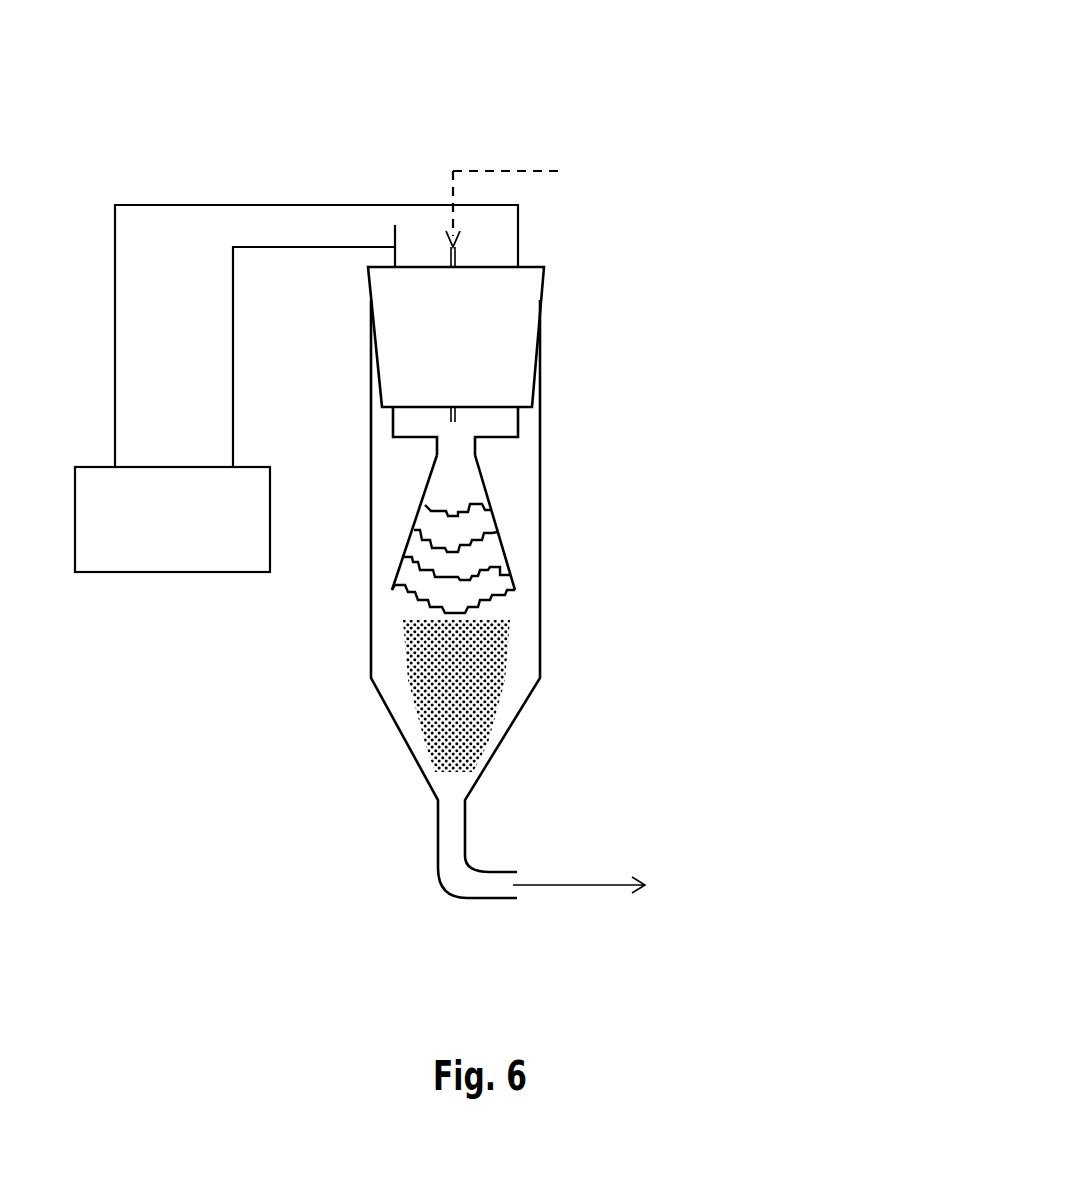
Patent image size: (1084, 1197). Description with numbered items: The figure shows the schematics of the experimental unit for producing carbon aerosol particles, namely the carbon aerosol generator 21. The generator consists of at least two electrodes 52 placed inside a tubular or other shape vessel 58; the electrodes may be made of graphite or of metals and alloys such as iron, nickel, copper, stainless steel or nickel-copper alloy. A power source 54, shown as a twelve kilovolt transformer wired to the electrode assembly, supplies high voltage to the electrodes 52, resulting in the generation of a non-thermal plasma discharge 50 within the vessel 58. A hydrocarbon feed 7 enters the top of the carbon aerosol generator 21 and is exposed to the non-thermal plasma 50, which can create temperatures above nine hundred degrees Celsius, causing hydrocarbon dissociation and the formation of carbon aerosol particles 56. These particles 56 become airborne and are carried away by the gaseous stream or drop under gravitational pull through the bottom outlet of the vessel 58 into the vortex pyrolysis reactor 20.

The hydrocarbon feed 7 is at (625, 165).
The vortex pyrolysis reactor 20 is at (723, 852).
The carbon aerosol generator 21 is at (502, 457).
The non-thermal plasma discharge 50 is at (460, 575).
The electrodes 52 is at (424, 486).
The power source 54 is at (195, 573).
The carbon aerosol particles 56 is at (418, 727).
The vessel 58 is at (543, 578).